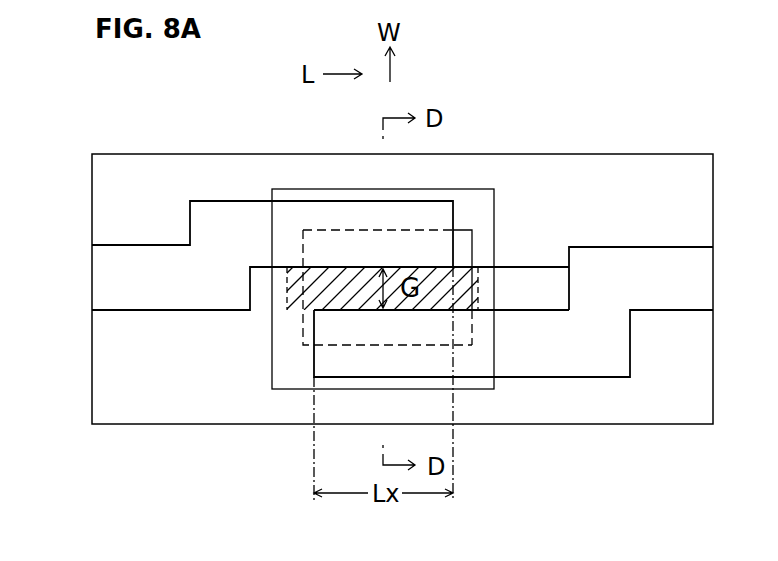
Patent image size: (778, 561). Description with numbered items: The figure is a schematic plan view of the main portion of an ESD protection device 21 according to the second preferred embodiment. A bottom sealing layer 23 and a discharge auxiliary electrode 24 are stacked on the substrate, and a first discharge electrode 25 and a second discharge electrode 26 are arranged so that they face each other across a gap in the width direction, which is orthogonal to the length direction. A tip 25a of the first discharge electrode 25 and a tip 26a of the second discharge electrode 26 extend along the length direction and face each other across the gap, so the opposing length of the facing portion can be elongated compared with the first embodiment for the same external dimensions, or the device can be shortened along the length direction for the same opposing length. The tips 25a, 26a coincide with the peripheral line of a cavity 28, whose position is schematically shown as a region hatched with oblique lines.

The ESD protection device 21 is at (68, 154).
The bottom sealing layer 23 is at (272, 389).
The discharge auxiliary electrode 24 is at (303, 345).
The first discharge electrode 25 is at (220, 201).
The tip of first discharge electrode 25a is at (428, 267).
The second discharge electrode 26 is at (593, 378).
The tip of second discharge electrode 26a is at (427, 311).
The cavity 28 is at (478, 280).